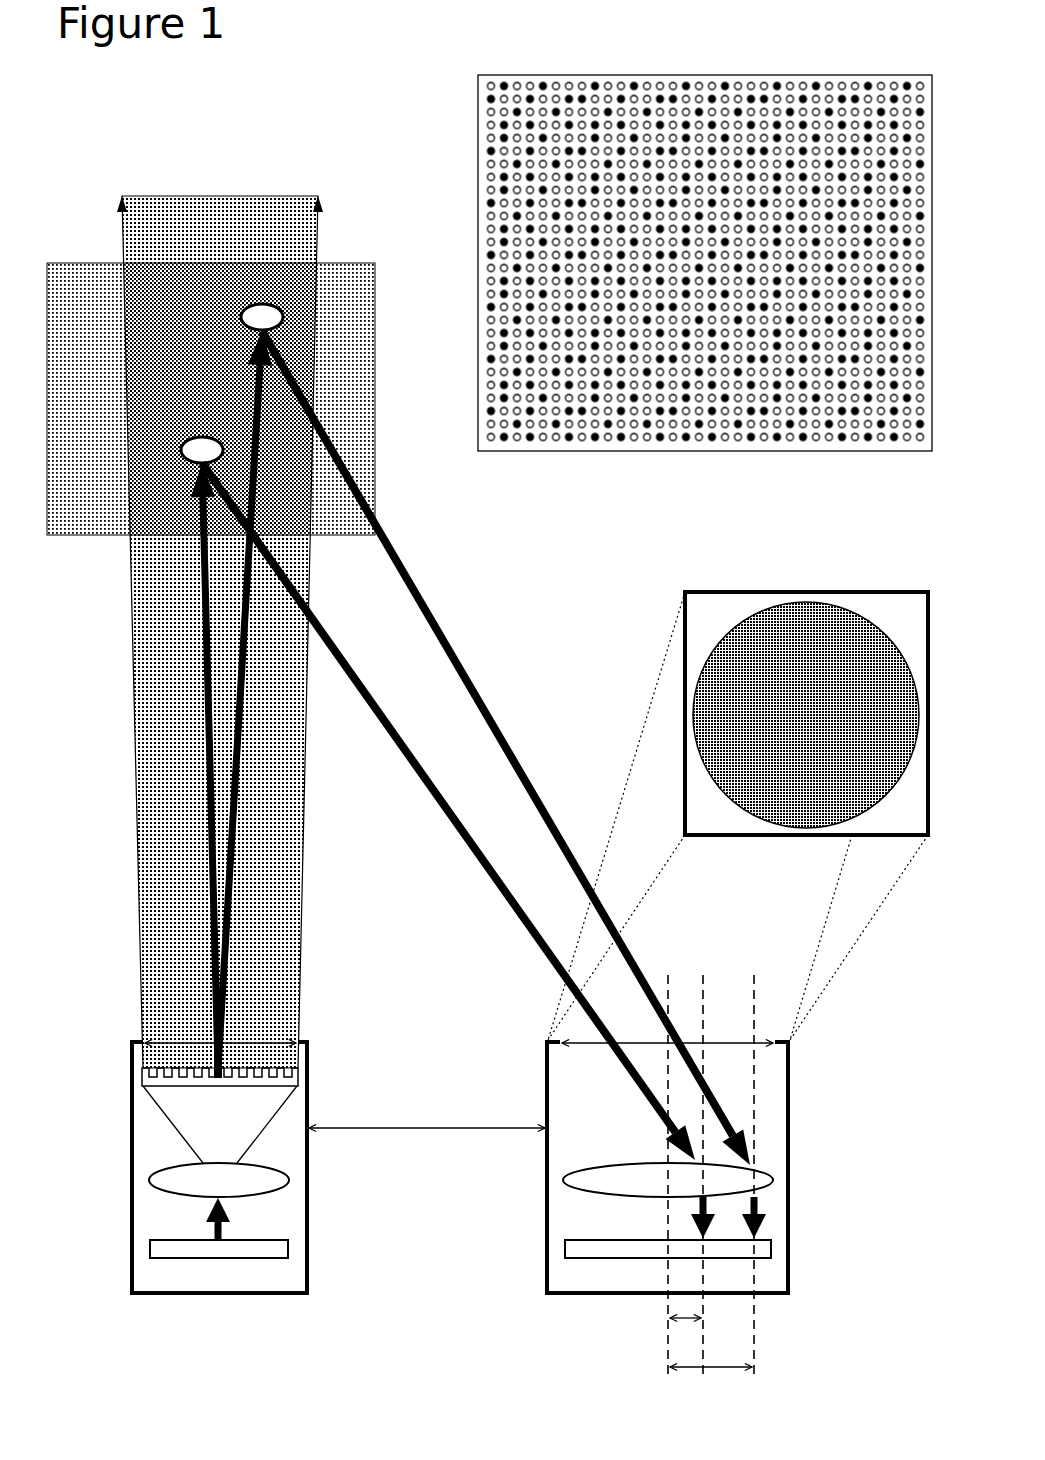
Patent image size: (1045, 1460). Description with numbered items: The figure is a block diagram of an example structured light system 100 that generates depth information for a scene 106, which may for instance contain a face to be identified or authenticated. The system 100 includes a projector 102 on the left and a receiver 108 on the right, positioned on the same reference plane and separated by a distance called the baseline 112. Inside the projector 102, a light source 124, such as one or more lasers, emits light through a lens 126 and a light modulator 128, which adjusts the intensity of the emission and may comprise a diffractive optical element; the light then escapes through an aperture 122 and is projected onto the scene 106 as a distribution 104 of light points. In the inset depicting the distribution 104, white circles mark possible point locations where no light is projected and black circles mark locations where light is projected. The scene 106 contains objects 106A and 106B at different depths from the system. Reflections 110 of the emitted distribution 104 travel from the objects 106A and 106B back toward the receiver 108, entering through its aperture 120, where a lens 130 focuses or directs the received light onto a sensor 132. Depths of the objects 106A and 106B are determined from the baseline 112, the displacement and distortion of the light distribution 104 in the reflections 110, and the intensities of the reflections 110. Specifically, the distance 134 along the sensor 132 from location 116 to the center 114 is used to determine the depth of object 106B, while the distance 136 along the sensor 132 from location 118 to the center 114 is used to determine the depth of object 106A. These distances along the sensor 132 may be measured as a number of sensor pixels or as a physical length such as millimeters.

The structured light system 100 is at (358, 110).
The projector 102 is at (131, 1145).
The distribution of light points 104 is at (477, 382).
The scene 106 is at (65, 290).
The object 106A is at (194, 437).
The object 106B is at (270, 305).
The receiver 108 is at (907, 835).
The reflections 110 is at (440, 757).
The baseline 112 is at (357, 1128).
The center 114 is at (668, 982).
The location 116 is at (703, 983).
The location 118 is at (754, 983).
The aperture 120 is at (806, 592).
The aperture 122 is at (152, 1040).
The light source 124 is at (166, 1258).
The lens 126 is at (158, 1182).
The light modulator 128 is at (300, 1083).
The lens 130 is at (563, 1181).
The sensor 132 is at (566, 1250).
The distance 134 is at (690, 1322).
The distance 136 is at (735, 1367).